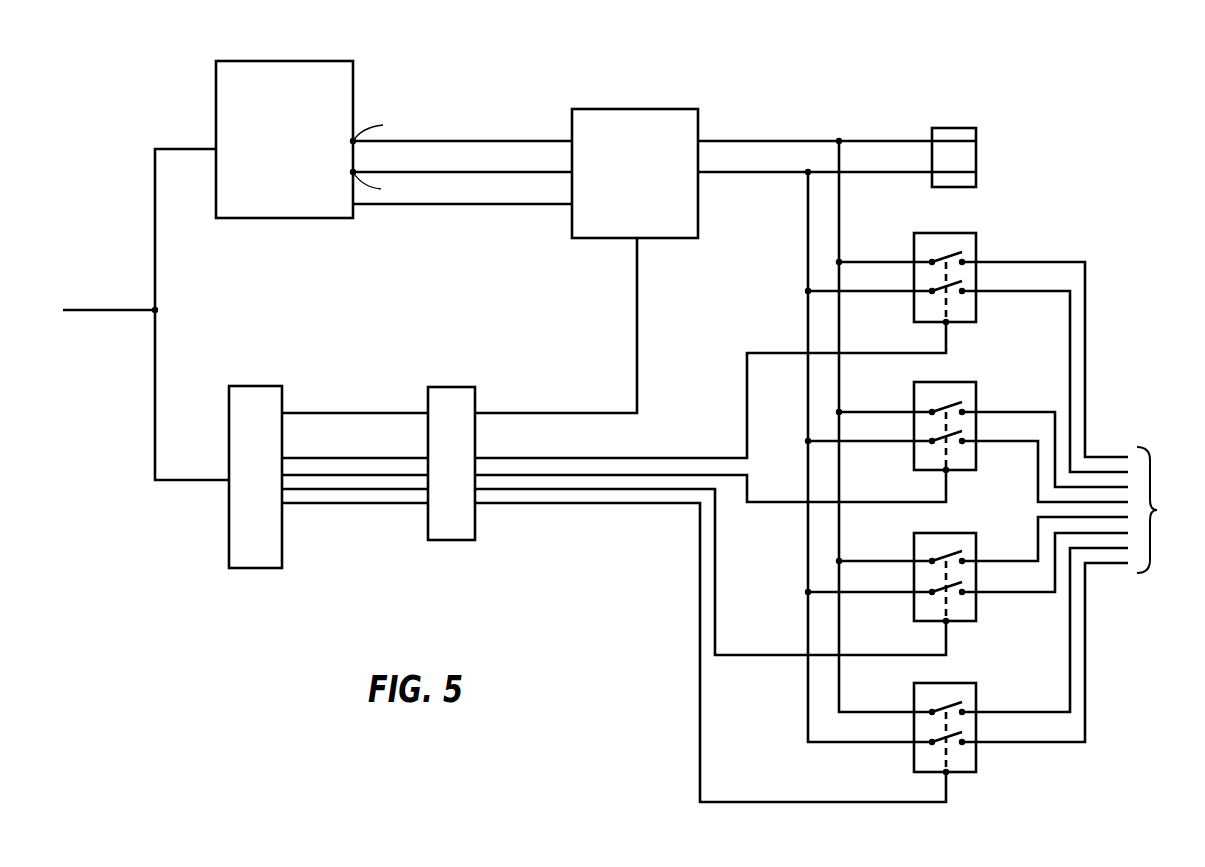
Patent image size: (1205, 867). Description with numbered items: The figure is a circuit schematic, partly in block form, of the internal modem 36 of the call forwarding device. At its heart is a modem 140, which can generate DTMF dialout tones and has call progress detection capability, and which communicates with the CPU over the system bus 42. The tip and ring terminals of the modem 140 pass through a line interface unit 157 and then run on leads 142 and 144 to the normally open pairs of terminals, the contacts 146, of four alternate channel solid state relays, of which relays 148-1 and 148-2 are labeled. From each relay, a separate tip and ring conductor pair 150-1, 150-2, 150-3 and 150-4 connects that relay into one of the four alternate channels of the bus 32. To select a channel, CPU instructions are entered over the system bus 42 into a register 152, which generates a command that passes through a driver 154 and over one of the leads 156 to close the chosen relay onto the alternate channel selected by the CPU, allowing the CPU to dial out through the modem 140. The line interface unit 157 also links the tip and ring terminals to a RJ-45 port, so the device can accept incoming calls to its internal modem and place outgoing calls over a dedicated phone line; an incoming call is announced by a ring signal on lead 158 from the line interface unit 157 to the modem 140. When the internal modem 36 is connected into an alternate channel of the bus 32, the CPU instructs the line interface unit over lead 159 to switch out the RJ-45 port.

The internal modem 36 is at (543, 83).
The system bus 42 is at (80, 310).
The modem 140 is at (277, 270).
The lead 142 is at (735, 141).
The lead 144 is at (729, 173).
The contacts 146 is at (950, 257).
The alternate channel solid state relay 148-1 is at (976, 240).
The alternate channel solid state relay 148-2 is at (976, 385).
The tip and ring conductor pair 150-1 is at (1013, 263).
The tip and ring conductor pair 150-2 is at (1000, 414).
The tip and ring conductor pair 150-3 is at (1008, 562).
The tip and ring conductor pair 150-4 is at (1003, 741).
The register 152 is at (283, 543).
The driver 154 is at (451, 540).
The leads 156 is at (601, 456).
The line interface unit 157 is at (635, 173).
The lead 158 is at (478, 204).
The lead 159 is at (540, 412).
The bus 32 is at (1169, 510).
The RJ-45 port RJ-45 is at (956, 128).